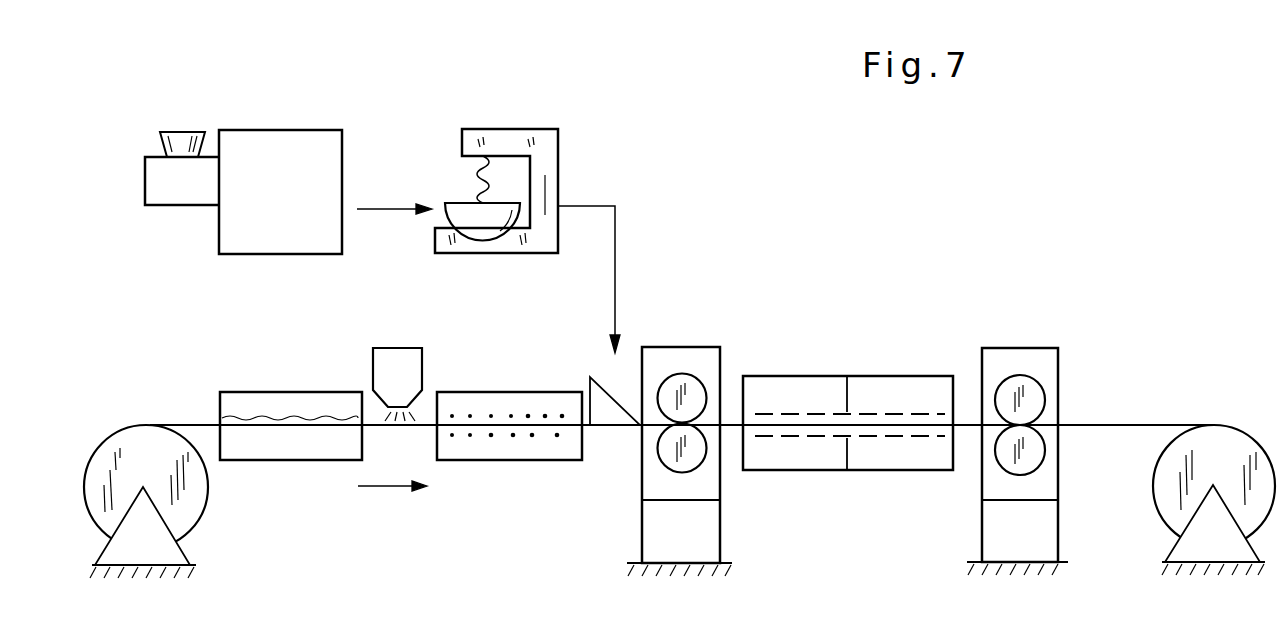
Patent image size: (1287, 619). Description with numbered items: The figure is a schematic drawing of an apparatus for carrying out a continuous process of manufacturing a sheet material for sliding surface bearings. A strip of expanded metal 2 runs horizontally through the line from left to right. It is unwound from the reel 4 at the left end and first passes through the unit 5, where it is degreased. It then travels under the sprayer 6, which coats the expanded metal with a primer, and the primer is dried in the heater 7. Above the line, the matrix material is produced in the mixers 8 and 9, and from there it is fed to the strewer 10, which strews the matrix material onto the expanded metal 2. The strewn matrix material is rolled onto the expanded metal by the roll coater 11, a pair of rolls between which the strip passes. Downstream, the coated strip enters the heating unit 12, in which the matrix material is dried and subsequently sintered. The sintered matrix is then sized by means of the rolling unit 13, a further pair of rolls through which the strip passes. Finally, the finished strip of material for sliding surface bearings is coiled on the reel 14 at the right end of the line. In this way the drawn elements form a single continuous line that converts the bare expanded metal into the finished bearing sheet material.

The strip of expanded metal 2 is at (1147, 424).
The reel 4 is at (137, 447).
The unit 5 is at (240, 400).
The sprayer 6 is at (390, 358).
The heater 7 is at (498, 400).
The mixer 8 is at (251, 147).
The mixer 9 is at (548, 140).
The strewer 10 is at (600, 380).
The roll coater 11 is at (690, 388).
The heating unit 12 is at (801, 385).
The rolling unit 13 is at (1033, 395).
The reel 14 is at (1221, 450).